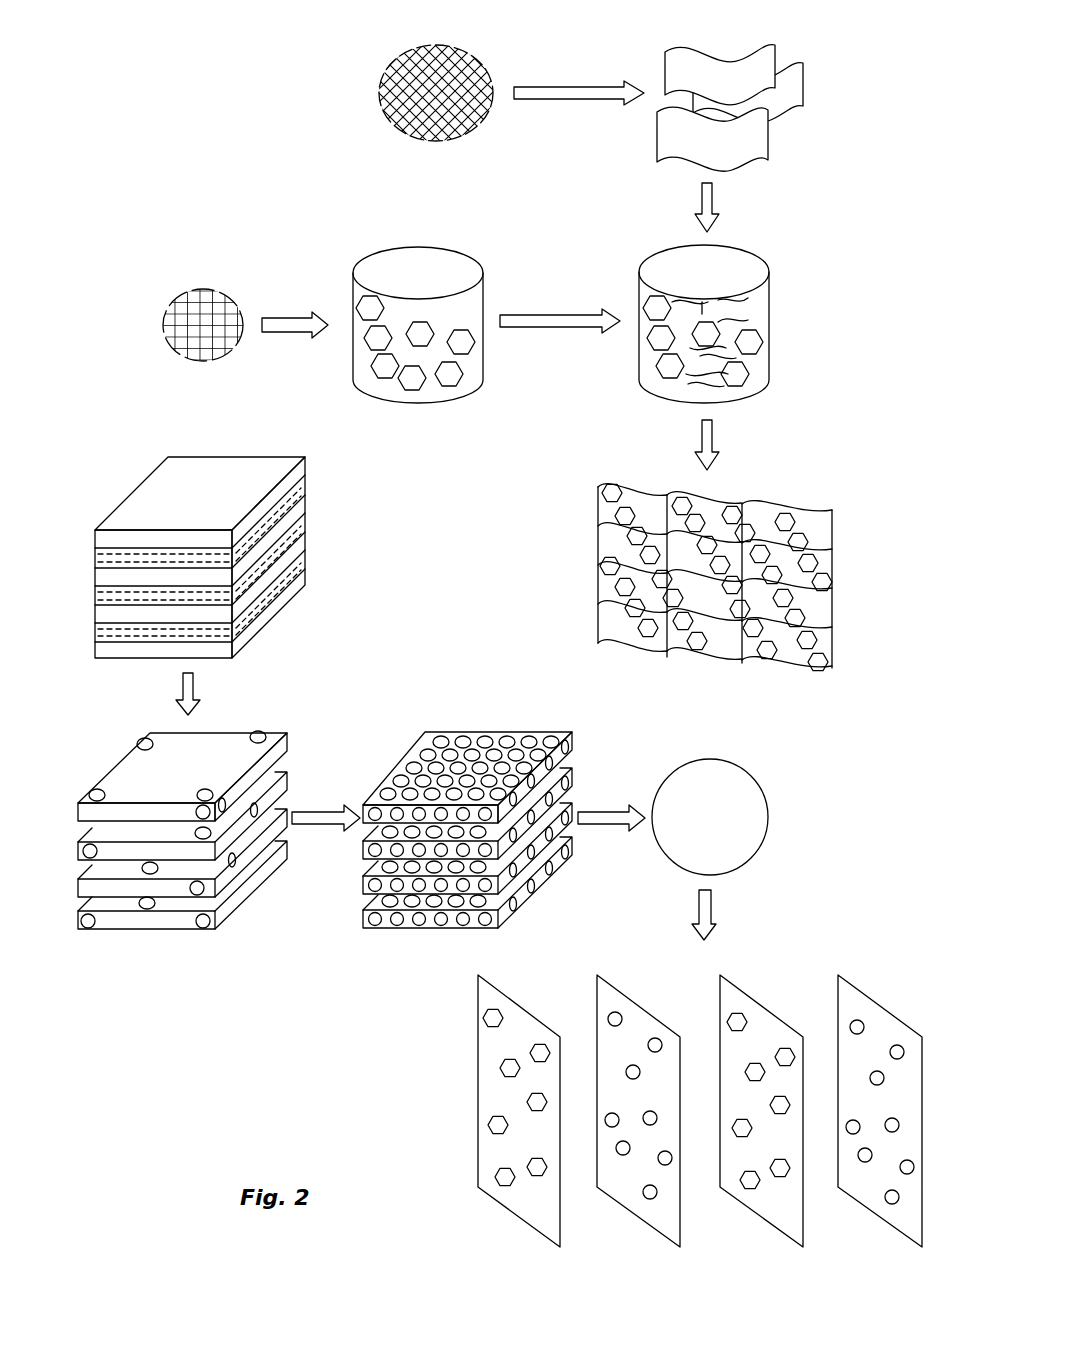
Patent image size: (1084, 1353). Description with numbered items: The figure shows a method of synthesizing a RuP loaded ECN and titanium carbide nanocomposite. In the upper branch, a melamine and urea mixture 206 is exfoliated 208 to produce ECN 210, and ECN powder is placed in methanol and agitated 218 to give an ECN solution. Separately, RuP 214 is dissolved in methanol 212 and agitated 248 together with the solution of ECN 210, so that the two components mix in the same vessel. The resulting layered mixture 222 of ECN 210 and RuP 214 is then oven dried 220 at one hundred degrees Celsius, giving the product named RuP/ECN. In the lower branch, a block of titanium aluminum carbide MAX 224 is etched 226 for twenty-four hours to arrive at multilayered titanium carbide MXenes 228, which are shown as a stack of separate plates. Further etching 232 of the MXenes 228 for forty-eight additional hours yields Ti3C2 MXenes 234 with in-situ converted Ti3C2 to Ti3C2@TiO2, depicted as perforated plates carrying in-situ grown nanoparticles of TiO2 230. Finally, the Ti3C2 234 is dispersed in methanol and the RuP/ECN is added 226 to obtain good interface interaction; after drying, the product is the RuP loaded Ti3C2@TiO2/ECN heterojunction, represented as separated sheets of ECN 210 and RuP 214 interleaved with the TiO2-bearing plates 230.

The melamine and urea mixture 206 is at (420, 70).
The exfoliation 208 is at (612, 94).
The ECN 210 is at (682, 52).
The methanol 212 is at (380, 272).
The RuP 214 is at (196, 318).
The agitation 218 is at (705, 210).
The oven drying 220 is at (710, 446).
The layered mixture 222 is at (578, 515).
The titanium aluminum carbide MAX 224 is at (322, 535).
The etching 226 is at (195, 692).
The multilayered titanium carbide MXenes 228 is at (369, 1010).
The TiO2 nanoparticles 230 is at (90, 924).
The further etching 232 is at (314, 822).
The Ti3C2 MXenes with in-situ converted Ti3C2@TiO2 234 is at (437, 712).
The agitation 248 is at (550, 326).